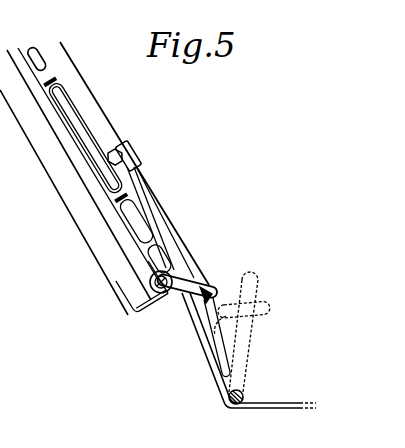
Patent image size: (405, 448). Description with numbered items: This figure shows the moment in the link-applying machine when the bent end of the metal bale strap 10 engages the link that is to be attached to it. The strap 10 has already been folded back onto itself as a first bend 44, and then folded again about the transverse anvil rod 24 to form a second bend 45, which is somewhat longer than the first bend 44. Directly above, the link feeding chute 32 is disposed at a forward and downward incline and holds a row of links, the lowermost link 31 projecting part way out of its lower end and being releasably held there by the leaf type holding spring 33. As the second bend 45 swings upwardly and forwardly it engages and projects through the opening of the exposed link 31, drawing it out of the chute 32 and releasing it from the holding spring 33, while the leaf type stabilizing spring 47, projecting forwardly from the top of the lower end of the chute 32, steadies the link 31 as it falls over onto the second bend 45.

The metal bale strap 10 is at (280, 407).
The transverse anvil rod 24 is at (241, 393).
The link 31 is at (152, 277).
The link feeding chute 32 is at (82, 193).
The holding spring 33 is at (153, 228).
The first bend 44 is at (214, 331).
The second bend 45 is at (208, 360).
The stabilizing spring 47 is at (176, 264).